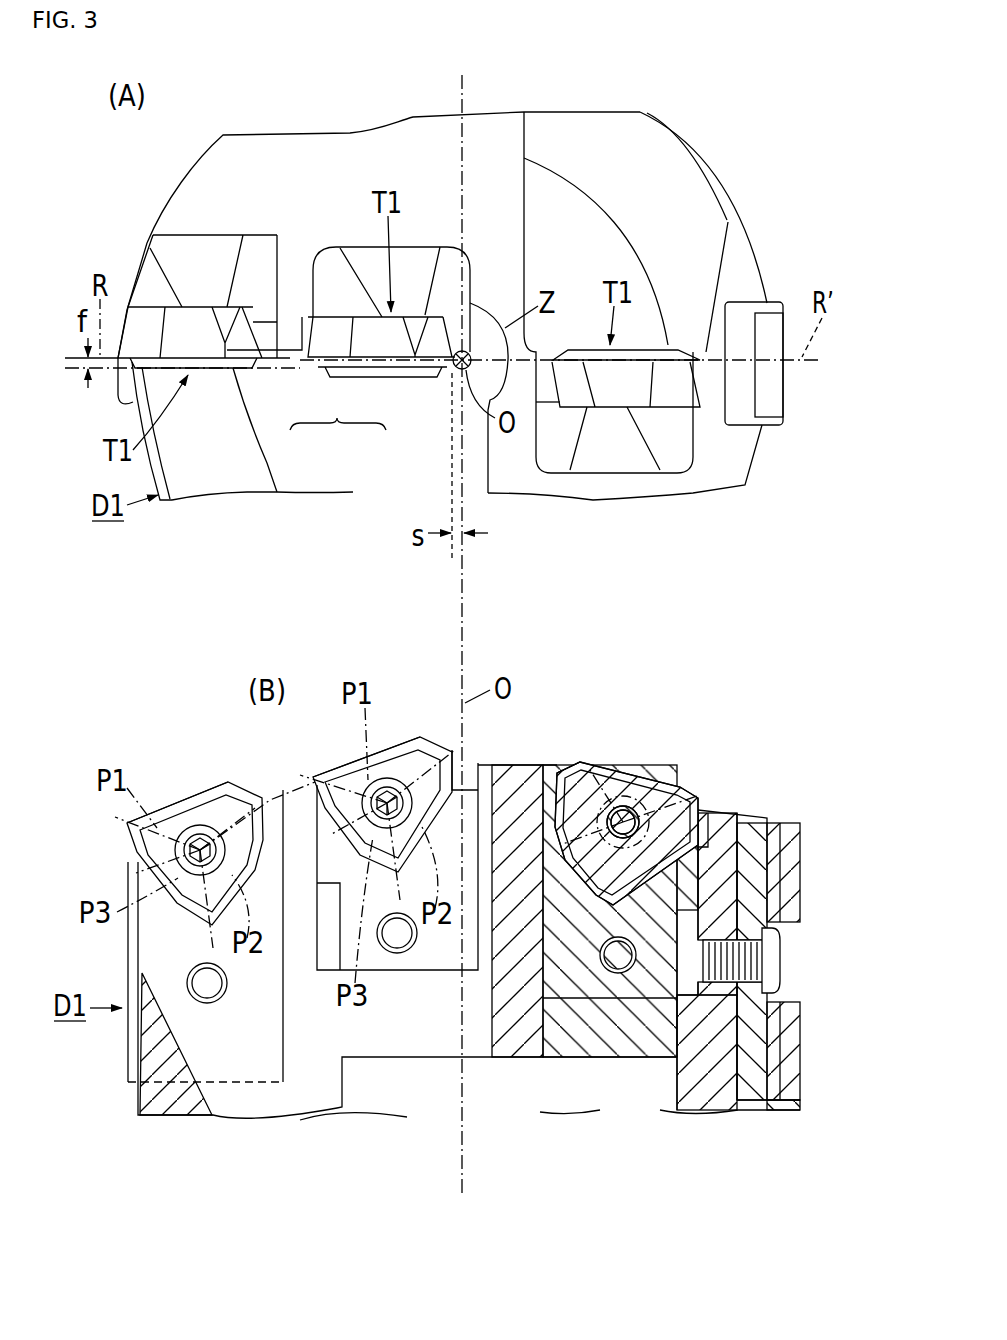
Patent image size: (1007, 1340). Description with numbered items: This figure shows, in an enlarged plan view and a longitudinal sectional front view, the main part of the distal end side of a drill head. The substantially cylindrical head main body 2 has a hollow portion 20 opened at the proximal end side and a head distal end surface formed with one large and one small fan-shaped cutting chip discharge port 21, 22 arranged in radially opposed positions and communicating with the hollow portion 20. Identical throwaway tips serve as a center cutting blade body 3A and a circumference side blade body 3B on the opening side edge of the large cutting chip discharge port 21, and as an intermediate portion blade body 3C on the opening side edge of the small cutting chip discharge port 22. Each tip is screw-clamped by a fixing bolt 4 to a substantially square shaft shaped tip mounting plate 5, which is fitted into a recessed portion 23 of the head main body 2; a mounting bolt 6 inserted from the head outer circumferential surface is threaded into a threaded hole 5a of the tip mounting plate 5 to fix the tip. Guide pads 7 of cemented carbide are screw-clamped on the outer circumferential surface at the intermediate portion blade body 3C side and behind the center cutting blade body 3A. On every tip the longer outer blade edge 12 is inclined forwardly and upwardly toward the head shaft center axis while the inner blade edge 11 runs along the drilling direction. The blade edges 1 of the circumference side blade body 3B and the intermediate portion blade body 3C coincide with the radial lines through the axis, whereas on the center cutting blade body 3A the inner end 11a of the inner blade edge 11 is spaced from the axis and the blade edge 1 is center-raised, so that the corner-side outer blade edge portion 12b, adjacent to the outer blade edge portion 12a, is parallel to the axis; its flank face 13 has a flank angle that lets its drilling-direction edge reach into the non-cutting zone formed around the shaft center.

The blade edge 1 is at (636, 345).
The head main body 2 is at (757, 250).
The center cutting blade body 3A is at (340, 305).
The circumference side blade body 3B is at (152, 300).
The intermediate portion blade body 3C is at (617, 407).
The fixing bolt 4 is at (180, 852).
The tip mounting plate 5 is at (196, 250).
The threaded hole 5a is at (397, 957).
The mounting bolt 6 is at (620, 957).
The guide pad 7 is at (772, 402).
The inner blade edge 11 is at (423, 377).
The inner end of the inner blade edge 11a is at (449, 377).
The outer blade edge 12 is at (630, 772).
The outer blade edge portion 12a is at (372, 378).
The corner-side outer blade edge portion 12b is at (330, 378).
The flank face 13 is at (466, 345).
The hollow portion 20 is at (597, 198).
The large cutting chip discharge port 21 is at (217, 450).
The small cutting chip discharge port 22 is at (683, 232).
The recessed portion 23 is at (228, 255).